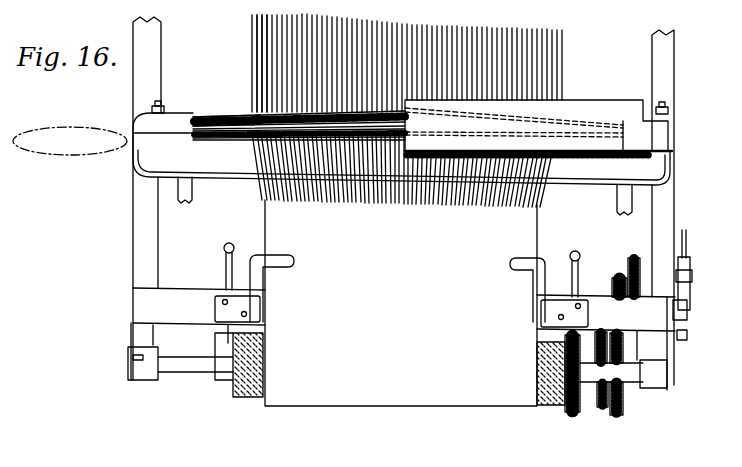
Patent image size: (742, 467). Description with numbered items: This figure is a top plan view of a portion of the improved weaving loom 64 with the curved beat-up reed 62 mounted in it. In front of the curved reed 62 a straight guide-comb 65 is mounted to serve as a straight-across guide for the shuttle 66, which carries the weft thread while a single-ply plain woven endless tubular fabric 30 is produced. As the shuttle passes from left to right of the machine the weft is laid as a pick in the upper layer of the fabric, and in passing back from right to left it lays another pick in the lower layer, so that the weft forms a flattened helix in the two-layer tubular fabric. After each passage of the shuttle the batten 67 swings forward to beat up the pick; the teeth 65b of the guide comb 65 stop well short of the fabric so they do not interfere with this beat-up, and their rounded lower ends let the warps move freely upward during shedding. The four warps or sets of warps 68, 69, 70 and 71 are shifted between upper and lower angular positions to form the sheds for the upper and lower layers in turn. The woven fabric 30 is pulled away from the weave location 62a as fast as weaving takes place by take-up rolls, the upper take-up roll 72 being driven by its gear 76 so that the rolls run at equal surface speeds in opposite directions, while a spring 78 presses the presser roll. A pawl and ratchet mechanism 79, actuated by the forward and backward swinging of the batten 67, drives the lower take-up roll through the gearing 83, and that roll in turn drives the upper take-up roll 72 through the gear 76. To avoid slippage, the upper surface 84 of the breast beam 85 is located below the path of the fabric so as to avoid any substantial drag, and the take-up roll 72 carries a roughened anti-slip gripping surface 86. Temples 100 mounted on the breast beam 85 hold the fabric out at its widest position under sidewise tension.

The tubular fabric 30 is at (397, 397).
The curved beat-up reed 62 is at (232, 112).
The weave location 62a is at (545, 207).
The weaving loom 64 is at (652, 70).
The straight guide-comb 65 is at (230, 137).
The teeth of the guide comb 65b is at (250, 139).
The shuttle 66 is at (65, 158).
The batten 67 is at (208, 179).
The warps 68 is at (252, 33).
The warps 69 is at (262, 41).
The warps 70 is at (256, 53).
The warps 71 is at (265, 68).
The take-up roll 72 is at (232, 390).
The gear 76 is at (572, 415).
The spring 78 is at (228, 244).
The pawl and ratchet mechanism 79 is at (692, 286).
The gearing 83 is at (620, 278).
The upper surface of the breast beam 84 is at (168, 298).
The breast beam 85 is at (200, 297).
The roughened anti-slip gripping surface 86 is at (247, 398).
The temples 100 is at (293, 253).